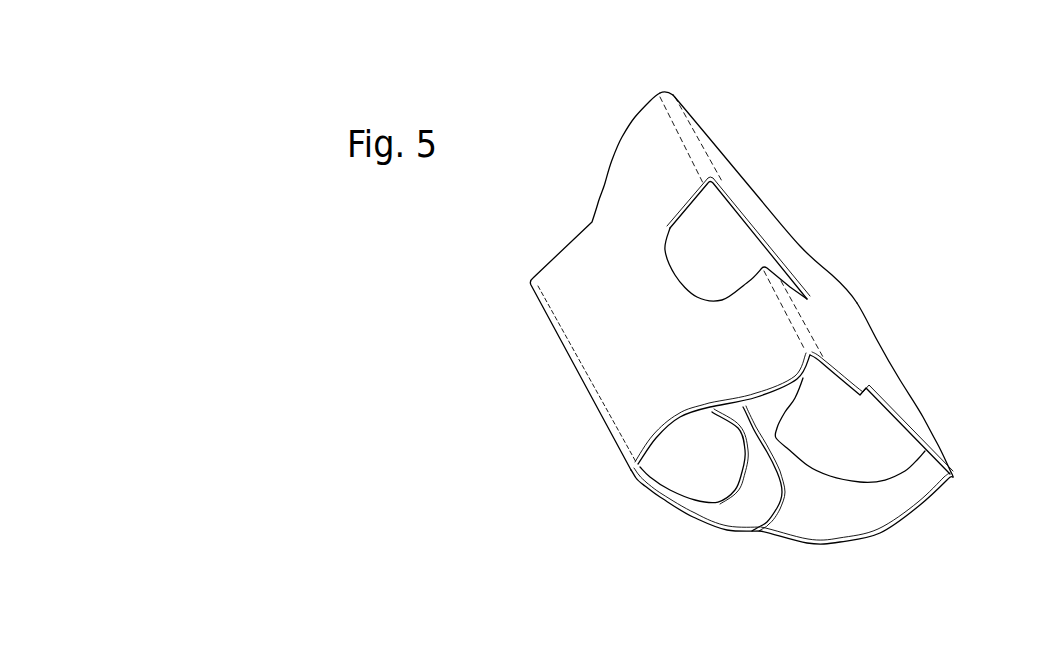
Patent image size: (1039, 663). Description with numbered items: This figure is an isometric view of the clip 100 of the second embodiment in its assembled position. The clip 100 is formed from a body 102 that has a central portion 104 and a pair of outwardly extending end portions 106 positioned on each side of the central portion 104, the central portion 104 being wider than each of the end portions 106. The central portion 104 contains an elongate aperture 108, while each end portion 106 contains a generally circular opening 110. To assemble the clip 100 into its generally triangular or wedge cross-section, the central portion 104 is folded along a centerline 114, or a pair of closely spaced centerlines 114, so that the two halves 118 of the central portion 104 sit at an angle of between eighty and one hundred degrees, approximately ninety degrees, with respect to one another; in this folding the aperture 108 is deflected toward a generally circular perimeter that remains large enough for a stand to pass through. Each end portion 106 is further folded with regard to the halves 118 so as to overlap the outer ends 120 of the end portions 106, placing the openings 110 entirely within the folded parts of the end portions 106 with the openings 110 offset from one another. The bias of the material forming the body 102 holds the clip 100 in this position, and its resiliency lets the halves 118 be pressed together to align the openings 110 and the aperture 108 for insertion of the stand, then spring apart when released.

The clip 100 is at (560, 138).
The body 102 is at (803, 238).
The central portion 104 is at (848, 313).
The end portions 106 is at (731, 519).
The elongate aperture 108 is at (747, 240).
The opening 110 is at (687, 467).
The centerline 114 is at (672, 88).
The halves 118 is at (607, 317).
The outer ends 120 is at (755, 451).